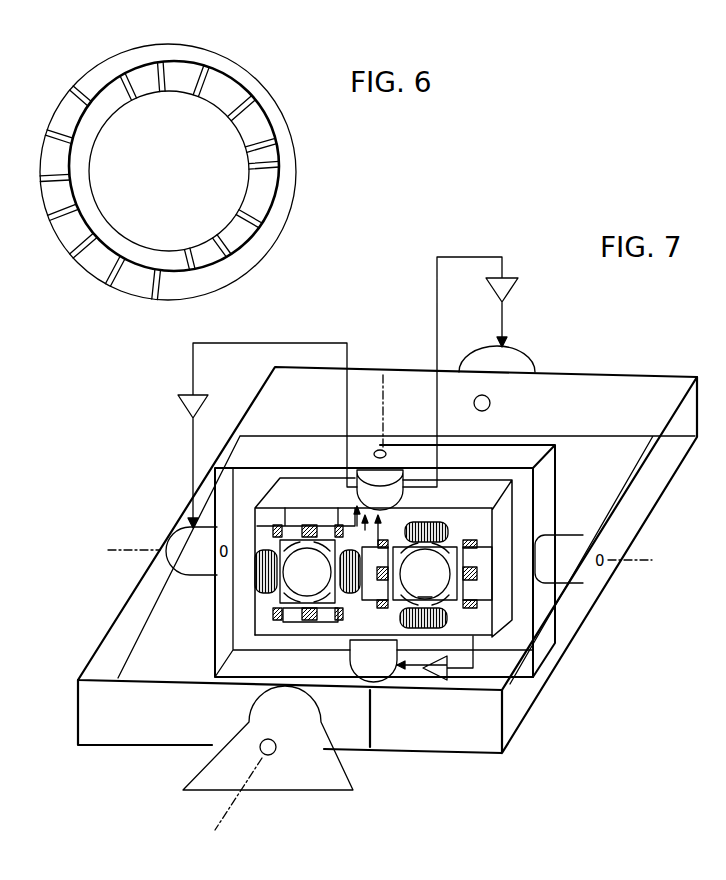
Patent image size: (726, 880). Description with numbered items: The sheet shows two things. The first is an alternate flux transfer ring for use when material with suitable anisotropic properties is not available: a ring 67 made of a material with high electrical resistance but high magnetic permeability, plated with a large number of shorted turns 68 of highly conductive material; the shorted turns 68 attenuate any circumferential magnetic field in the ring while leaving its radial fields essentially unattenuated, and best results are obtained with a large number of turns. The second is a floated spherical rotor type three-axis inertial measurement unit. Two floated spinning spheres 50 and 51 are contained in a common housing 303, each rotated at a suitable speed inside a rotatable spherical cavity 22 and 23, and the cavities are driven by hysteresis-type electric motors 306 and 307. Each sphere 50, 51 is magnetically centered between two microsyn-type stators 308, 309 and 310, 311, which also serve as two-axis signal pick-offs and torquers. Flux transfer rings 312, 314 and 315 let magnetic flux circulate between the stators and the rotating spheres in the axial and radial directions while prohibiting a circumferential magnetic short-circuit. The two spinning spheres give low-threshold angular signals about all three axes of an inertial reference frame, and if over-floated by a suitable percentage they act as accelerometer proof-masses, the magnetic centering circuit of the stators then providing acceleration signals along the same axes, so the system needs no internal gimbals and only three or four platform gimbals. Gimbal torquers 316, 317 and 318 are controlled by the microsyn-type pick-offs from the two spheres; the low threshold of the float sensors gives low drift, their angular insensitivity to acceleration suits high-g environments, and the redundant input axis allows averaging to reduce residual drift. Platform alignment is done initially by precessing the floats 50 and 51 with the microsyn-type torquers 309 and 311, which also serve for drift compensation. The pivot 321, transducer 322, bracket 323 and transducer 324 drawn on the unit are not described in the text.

In FIG. 6, the ring 67 is at (170, 172).
In FIG. 6, the shorted turns 68 is at (159, 171).
In FIG. 7, the rotatable spherical cavity 22 is at (259, 522).
In FIG. 7, the rotatable spherical cavity 23 is at (377, 526).
In FIG. 7, the floated spinning sphere 50 is at (289, 572).
In FIG. 7, the floated spinning sphere 51 is at (425, 587).
In FIG. 7, the common housing 303 is at (376, 555).
In FIG. 7, the hysteresis-type electric motor 306 is at (227, 579).
In FIG. 7, the hysteresis-type electric motor 307 is at (439, 579).
In FIG. 7, the microsyn-type stator 308 is at (306, 504).
In FIG. 7, the microsyn-type stator 309 is at (373, 654).
In FIG. 7, the microsyn-type stator 310 is at (369, 585).
In FIG. 7, the microsyn-type stator 311 is at (478, 556).
In FIG. 7, the flux transfer ring 312 is at (307, 572).
In FIG. 7, the flux transfer ring 314 is at (425, 574).
In FIG. 7, the flux transfer ring 315 is at (431, 550).
In FIG. 7, the gimbal torquer 316 is at (361, 661).
In FIG. 7, the gimbal torquer 317 is at (174, 544).
In FIG. 7, the gimbal torquer 318 is at (404, 507).
In FIG. 7, the pivot 321 is at (399, 462).
In FIG. 7, the transducer 322 is at (563, 547).
In FIG. 7, the bracket 323 is at (269, 758).
In FIG. 7, the transducer 324 is at (400, 490).